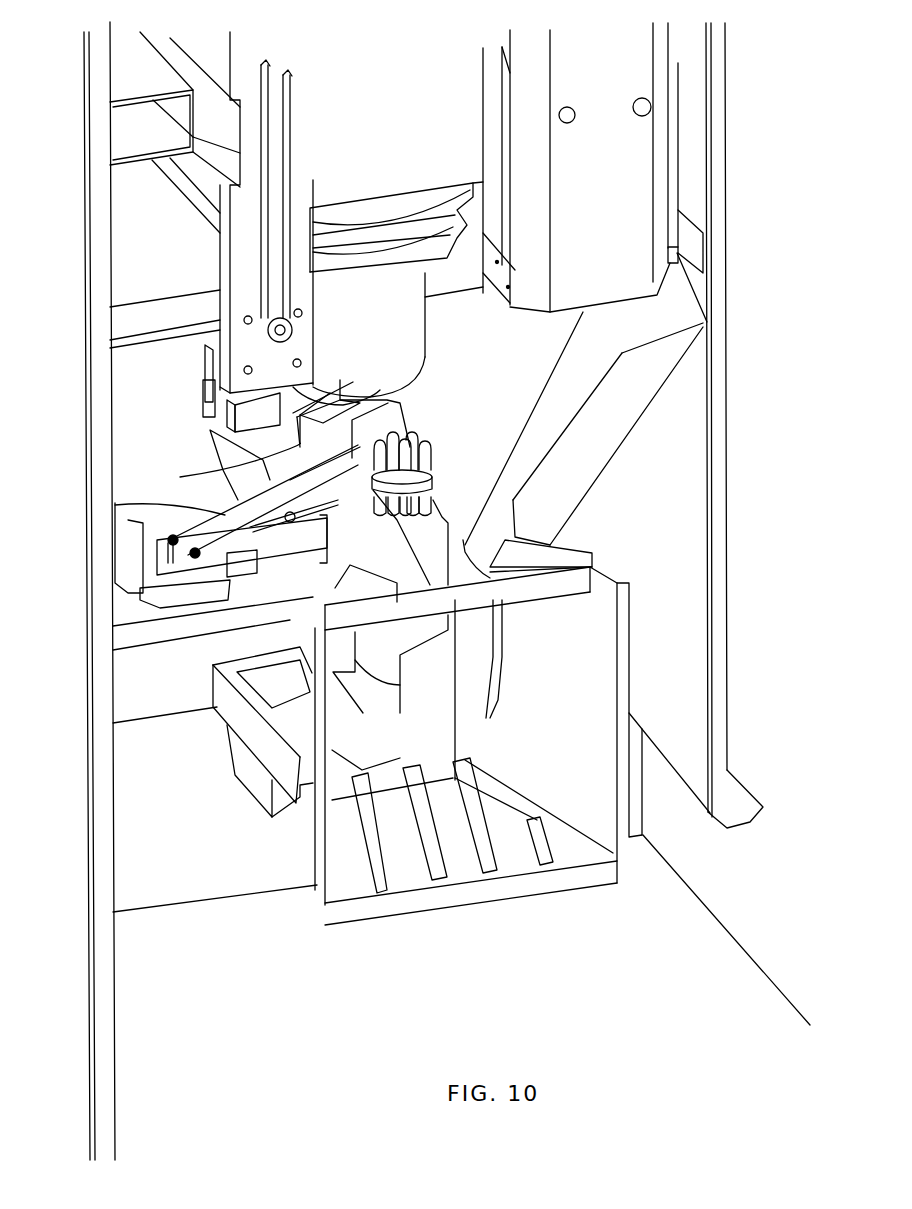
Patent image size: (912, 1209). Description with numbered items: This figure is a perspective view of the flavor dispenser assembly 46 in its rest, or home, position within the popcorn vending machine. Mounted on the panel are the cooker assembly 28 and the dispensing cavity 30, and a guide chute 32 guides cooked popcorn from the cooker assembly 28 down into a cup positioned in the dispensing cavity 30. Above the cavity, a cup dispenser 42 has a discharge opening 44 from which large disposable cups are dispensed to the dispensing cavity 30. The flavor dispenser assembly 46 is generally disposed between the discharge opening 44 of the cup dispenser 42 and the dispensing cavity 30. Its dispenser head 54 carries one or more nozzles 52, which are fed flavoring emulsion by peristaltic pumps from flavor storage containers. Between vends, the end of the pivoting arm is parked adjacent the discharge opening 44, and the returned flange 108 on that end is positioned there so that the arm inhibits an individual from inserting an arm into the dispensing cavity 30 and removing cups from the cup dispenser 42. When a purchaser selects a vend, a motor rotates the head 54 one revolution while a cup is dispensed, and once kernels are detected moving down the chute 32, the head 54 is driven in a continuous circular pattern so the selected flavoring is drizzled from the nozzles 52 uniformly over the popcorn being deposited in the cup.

The cooker assembly 28 is at (678, 65).
The dispensing cavity 30 is at (608, 713).
The guide chute 32 is at (638, 415).
The cup dispenser 42 is at (482, 317).
The discharge opening 44 is at (387, 387).
The flavor dispenser assembly 46 is at (128, 517).
The nozzles 52 is at (357, 447).
The head 54 is at (433, 467).
The returned flange 108 is at (220, 470).